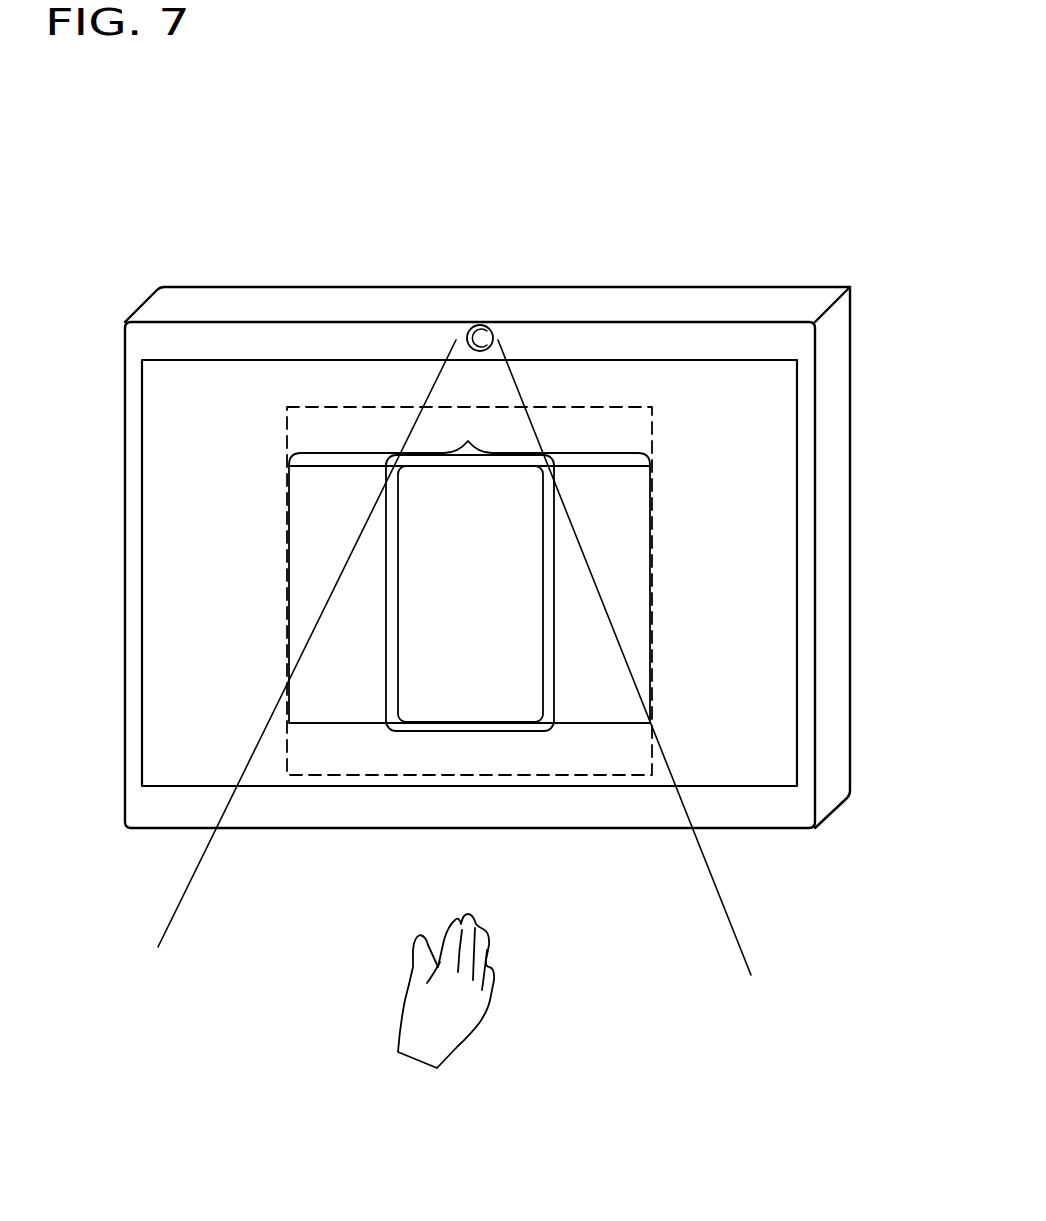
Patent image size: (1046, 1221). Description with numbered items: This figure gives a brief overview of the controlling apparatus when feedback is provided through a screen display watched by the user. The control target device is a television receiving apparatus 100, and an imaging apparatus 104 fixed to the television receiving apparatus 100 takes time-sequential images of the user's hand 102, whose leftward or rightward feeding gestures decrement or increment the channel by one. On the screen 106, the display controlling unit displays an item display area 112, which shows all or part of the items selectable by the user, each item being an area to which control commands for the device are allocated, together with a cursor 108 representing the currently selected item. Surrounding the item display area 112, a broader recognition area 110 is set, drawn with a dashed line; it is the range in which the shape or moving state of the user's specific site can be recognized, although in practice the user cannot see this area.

The television receiving apparatus 100 is at (372, 286).
The user's hand 102 is at (480, 992).
The imaging apparatus 104 is at (488, 325).
The screen 106 is at (176, 428).
The cursor 108 is at (505, 732).
The recognition area 110 is at (287, 502).
The item display area 112 is at (470, 436).